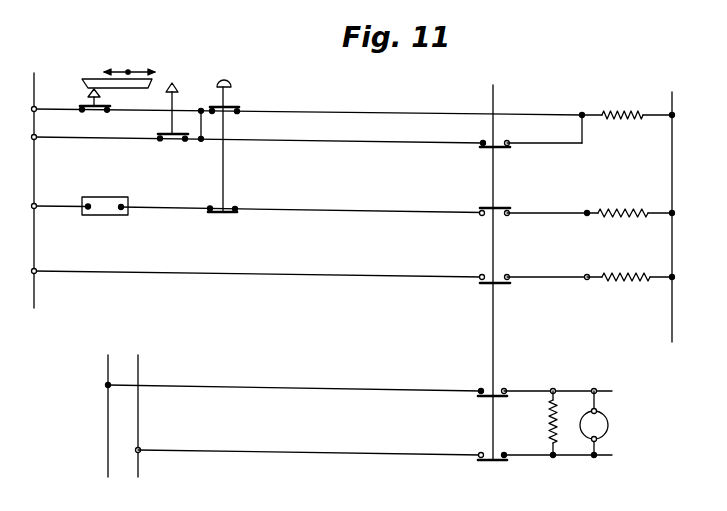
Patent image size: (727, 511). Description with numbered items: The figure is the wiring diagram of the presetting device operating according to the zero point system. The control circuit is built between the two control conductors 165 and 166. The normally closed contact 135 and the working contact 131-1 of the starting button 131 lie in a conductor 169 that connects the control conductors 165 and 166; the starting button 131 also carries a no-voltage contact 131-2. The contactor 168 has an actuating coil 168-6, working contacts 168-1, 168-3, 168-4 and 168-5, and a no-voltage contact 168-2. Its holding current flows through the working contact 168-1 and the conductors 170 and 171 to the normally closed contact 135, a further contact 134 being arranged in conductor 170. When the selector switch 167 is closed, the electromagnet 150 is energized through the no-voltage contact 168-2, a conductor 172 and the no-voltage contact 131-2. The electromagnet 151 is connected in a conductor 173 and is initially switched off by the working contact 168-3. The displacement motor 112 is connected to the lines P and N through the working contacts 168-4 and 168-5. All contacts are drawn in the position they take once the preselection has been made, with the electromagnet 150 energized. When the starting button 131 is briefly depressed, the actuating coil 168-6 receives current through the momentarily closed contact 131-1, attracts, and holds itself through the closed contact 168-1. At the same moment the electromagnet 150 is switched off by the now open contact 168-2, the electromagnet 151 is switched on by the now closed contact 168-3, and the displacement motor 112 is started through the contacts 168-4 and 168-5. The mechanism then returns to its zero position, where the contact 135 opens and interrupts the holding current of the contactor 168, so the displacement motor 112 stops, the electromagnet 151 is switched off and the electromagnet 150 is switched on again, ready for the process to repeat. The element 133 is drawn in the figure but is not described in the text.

The control conductor 165 is at (34, 73).
The bimetal actuator 133 is at (95, 79).
The normally closed contact 135 is at (81, 105).
The starting button 131 is at (224, 79).
The working contact 131-1 is at (239, 106).
The no-voltage contact 131-2 is at (238, 214).
The contact 134 is at (157, 134).
The conductor 171 is at (202, 126).
The selector switch 167 is at (105, 205).
The conductor 169 is at (384, 109).
The conductor 170 is at (382, 144).
The conductor 172 is at (386, 213).
The conductor 173 is at (386, 278).
The contactor 168 is at (493, 85).
The working contact 168-1 is at (510, 147).
The no-voltage contact 168-2 is at (506, 208).
The working contact 168-3 is at (509, 285).
The working contact 168-4 is at (505, 389).
The working contact 168-5 is at (505, 453).
The actuating coil 168-6 is at (621, 112).
The control conductor 166 is at (671, 100).
The electromagnet 150 is at (620, 210).
The electromagnet 151 is at (616, 281).
The displacement motor 112 is at (608, 427).
The line P is at (292, 404).
The line N is at (307, 404).